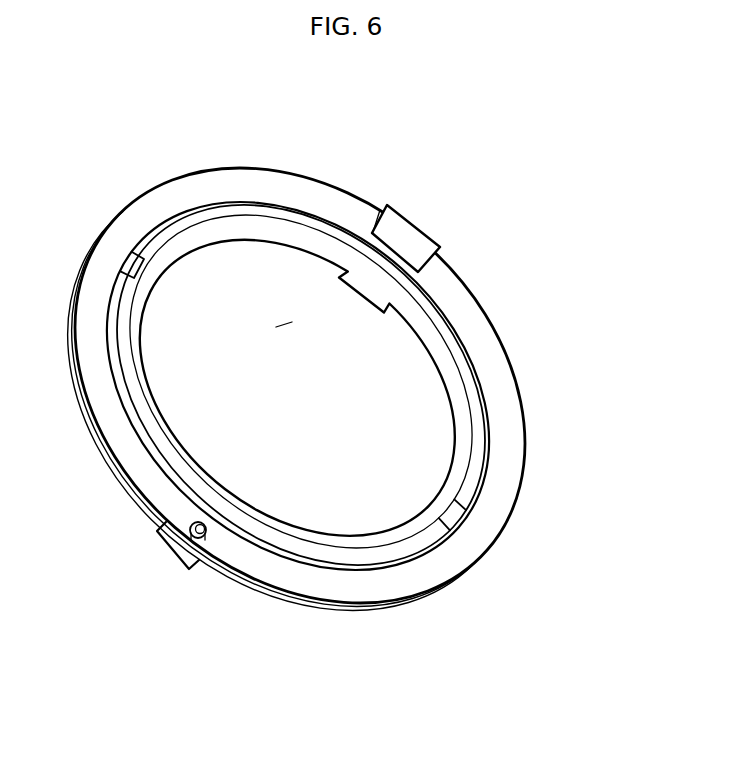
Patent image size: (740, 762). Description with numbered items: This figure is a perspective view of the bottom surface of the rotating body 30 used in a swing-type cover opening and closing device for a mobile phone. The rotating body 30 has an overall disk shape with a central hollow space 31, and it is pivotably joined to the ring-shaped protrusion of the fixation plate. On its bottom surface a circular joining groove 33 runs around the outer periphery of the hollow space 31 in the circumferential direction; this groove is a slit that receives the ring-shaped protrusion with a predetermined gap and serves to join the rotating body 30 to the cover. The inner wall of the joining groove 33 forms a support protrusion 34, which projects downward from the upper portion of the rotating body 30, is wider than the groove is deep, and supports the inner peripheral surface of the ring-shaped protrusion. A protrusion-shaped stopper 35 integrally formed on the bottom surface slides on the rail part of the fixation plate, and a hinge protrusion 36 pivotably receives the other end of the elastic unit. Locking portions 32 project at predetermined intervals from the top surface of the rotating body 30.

The rotating body 30 is at (504, 241).
The hollow space 31 is at (285, 322).
The locking portion 32 is at (173, 554).
The joining groove 33 is at (432, 545).
The support protrusion 34 is at (484, 408).
The stopper 35 is at (405, 232).
The hinge protrusion 36 is at (204, 537).